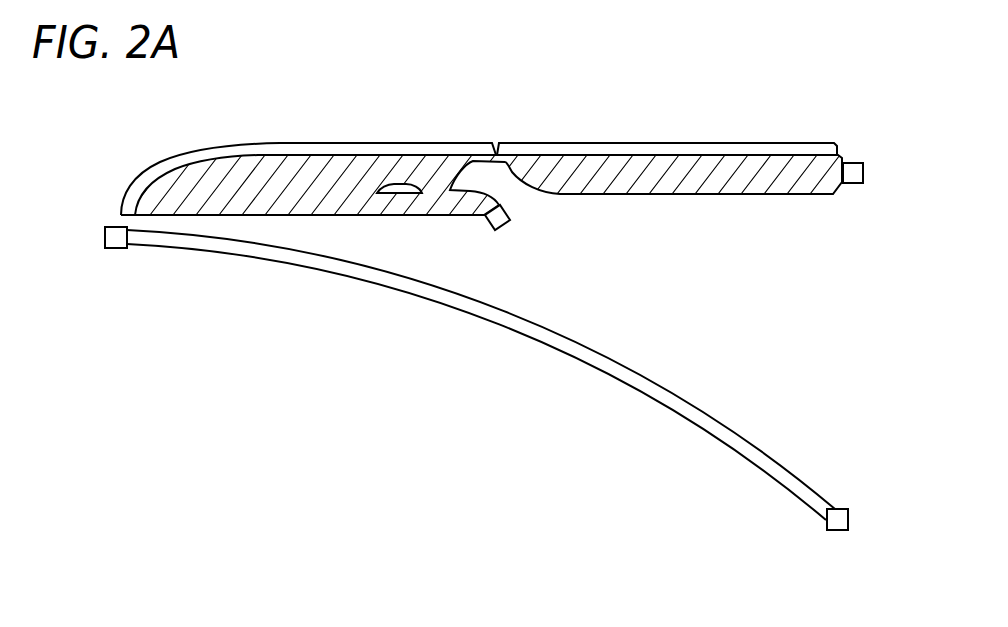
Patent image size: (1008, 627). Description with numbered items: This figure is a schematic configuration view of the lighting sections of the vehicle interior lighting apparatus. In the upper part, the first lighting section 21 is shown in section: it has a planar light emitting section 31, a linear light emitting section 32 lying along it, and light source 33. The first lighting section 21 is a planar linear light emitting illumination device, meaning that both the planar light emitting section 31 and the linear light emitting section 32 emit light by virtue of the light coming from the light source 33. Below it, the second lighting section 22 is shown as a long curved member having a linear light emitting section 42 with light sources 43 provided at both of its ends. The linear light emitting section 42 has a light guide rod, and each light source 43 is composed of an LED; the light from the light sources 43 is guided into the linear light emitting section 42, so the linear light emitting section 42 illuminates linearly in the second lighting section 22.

The first lighting section 21 is at (692, 112).
The second lighting section 22 is at (687, 358).
The planar light emitting section 31 is at (618, 195).
The linear light emitting section 32 is at (565, 142).
The light source 33 is at (853, 162).
The linear light emitting section 42 is at (450, 305).
The light source 43 is at (110, 249).